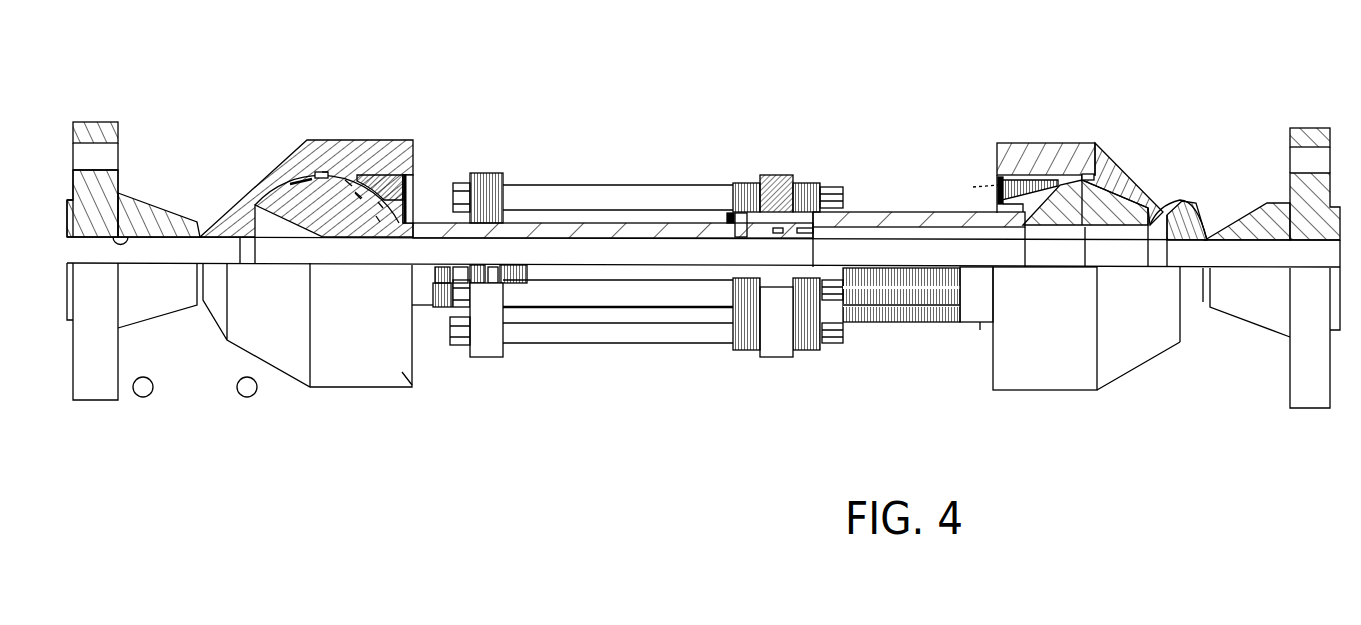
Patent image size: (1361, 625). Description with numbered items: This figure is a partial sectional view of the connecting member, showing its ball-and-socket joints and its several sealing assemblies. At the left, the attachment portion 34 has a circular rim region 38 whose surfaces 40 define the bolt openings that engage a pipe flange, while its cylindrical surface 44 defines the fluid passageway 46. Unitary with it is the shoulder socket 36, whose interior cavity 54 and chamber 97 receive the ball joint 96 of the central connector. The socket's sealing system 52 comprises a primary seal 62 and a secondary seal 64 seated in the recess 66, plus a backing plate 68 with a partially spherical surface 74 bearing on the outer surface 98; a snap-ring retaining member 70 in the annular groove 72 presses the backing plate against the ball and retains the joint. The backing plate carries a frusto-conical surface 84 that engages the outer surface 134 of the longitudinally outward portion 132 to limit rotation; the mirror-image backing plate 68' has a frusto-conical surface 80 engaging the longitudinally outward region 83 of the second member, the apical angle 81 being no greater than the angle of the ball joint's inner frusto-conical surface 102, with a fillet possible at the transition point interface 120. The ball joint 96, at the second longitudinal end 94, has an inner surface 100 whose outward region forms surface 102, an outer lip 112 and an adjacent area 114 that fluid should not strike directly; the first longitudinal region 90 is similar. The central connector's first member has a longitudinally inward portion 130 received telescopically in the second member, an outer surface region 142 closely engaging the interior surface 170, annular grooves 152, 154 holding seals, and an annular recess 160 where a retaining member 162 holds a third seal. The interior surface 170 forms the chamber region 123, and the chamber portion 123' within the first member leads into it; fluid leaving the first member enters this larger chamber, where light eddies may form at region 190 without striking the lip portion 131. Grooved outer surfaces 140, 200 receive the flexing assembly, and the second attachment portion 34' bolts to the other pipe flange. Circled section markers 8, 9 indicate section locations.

The attachment portion 34 is at (87, 224).
The circular rim region 38 is at (110, 178).
The cylindrical surface 44 is at (128, 235).
The fluid passageway 46 is at (165, 257).
The sealing system 52 is at (426, 158).
The primary seal 62 is at (290, 175).
The secondary seal 64 is at (318, 173).
The shoulder socket 36 is at (325, 172).
The recess 66 is at (352, 185).
The surfaces 40 is at (360, 195).
The backing plate 68 is at (415, 138).
The retaining member 70 is at (410, 222).
The annular groove 72 is at (380, 205).
The partially spherical surface 74 is at (358, 195).
The interior cavity 54 is at (388, 222).
The frusto-conical surface 84 is at (378, 220).
The outer surface 140 is at (520, 222).
The shaft section 123' is at (613, 234).
The retaining member 162 is at (738, 233).
The longitudinally inward portion 130 is at (725, 220).
The outer surface region 142 is at (745, 183).
The annular groove 152 is at (785, 178).
The annular groove 154 is at (805, 228).
The region 190 is at (830, 190).
The lip portion 131 is at (815, 232).
The interior surface 170 is at (940, 228).
The apical angle 81 is at (975, 190).
The frusto-conical surface 80 is at (1000, 183).
The backing plate 68' is at (981, 136).
The transition point interface 120 is at (1080, 176).
The outer surface 98 is at (1103, 178).
The ball joint 96 is at (1120, 200).
The area 114 is at (1117, 205).
The outer lip 112 is at (1160, 213).
The frusto-conical surface 102 is at (1130, 237).
The inner surface 100 is at (1120, 215).
The chamber 97 is at (1065, 256).
The longitudinally outward region 83 is at (980, 322).
The second longitudinal end 94 is at (968, 345).
The outer surface 200 is at (858, 322).
The annular recess 160 is at (727, 268).
The chamber region 123 is at (618, 325).
The first longitudinal region 90 is at (482, 368).
The longitudinally outward portion 132 is at (425, 300).
The outer surface 134 is at (410, 303).
The attachment portion 34' is at (1316, 238).
The section line 8 is at (280, 247).
The section line 9 is at (173, 248).